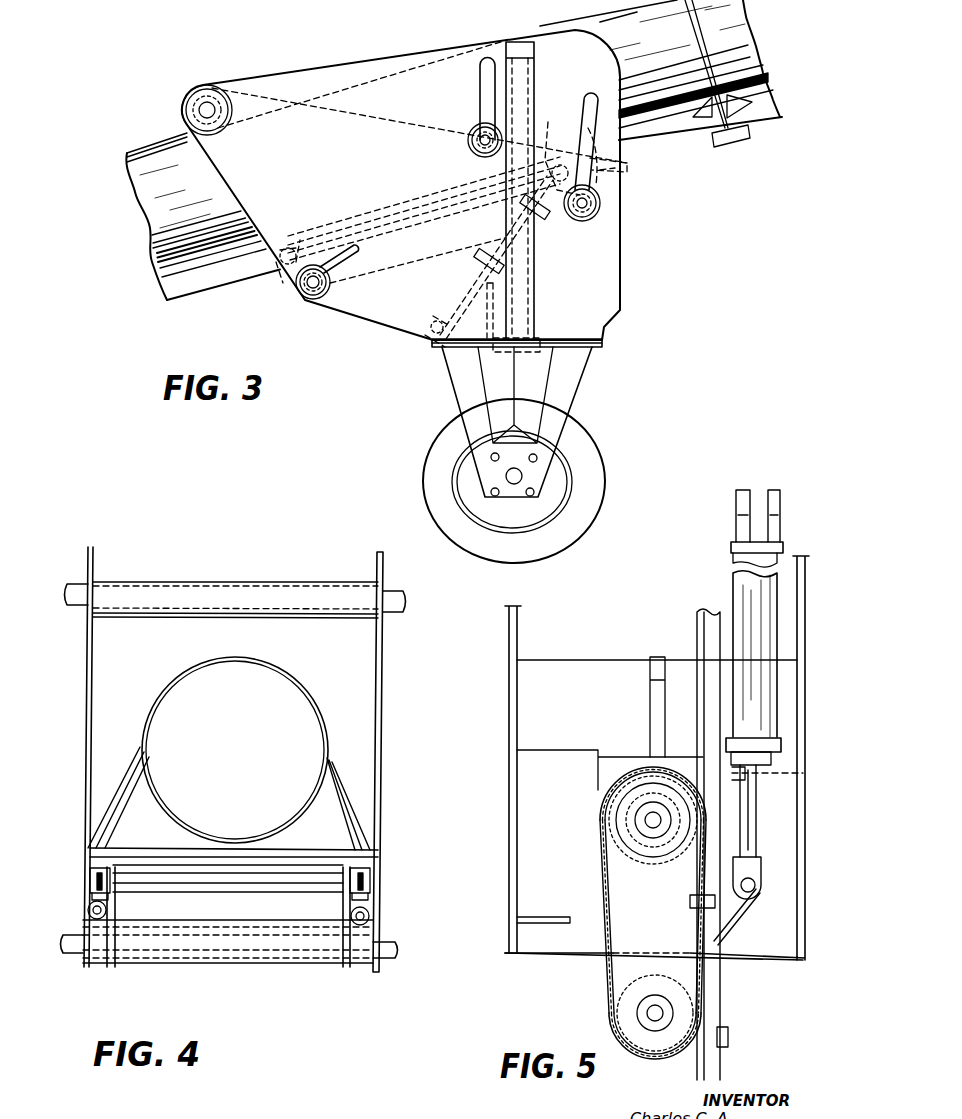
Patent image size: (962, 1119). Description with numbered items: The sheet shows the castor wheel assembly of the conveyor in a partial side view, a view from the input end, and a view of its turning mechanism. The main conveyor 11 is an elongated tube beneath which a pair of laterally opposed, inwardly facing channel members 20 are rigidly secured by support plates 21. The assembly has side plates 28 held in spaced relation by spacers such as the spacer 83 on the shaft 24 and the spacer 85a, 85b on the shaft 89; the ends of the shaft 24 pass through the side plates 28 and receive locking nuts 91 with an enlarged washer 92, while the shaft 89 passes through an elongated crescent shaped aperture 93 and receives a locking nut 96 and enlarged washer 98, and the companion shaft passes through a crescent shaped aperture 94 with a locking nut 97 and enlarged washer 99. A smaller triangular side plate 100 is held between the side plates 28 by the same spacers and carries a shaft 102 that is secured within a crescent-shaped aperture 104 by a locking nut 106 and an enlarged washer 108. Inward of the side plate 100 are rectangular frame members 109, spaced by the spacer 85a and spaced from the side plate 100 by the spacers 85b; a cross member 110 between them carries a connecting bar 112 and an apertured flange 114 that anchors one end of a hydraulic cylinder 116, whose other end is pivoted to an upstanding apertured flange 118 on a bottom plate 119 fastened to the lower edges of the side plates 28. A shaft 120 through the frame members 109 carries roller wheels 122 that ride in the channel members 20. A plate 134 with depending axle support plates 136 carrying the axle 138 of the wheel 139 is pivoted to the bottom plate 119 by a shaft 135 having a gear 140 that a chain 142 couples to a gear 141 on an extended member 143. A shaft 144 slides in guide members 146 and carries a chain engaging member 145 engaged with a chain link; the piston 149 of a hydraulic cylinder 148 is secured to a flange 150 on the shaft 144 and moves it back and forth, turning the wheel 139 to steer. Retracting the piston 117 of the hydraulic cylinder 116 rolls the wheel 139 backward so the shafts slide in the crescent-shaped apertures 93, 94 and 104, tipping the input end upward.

In FIG. 3, the side plates 28 is at (337, 62).
In FIG. 5, the side plates 28 is at (804, 838).
In FIG. 3, the locking nuts 91 is at (188, 100).
In FIG. 3, the enlarged washer 92 is at (204, 90).
In FIG. 3, the crescent shaped aperture 93 is at (357, 266).
In FIG. 3, the crescent shaped aperture 94 is at (606, 100).
In FIG. 3, the locking nut 96 is at (304, 293).
In FIG. 3, the locking nut 97 is at (600, 208).
In FIG. 3, the enlarged washer 98 is at (310, 300).
In FIG. 3, the enlarged washer 99 is at (596, 218).
In FIG. 3, the side plate 100 is at (275, 92).
In FIG. 4, the side plate 100 is at (82, 716).
In FIG. 3, the shaft 102 is at (478, 128).
In FIG. 3, the crescent-shaped aperture 104 is at (508, 42).
In FIG. 3, the locking nut 106 is at (474, 152).
In FIG. 3, the enlarged washer 108 is at (472, 140).
In FIG. 3, the cross member 110 is at (590, 152).
In FIG. 3, the connecting bar 112 is at (627, 163).
In FIG. 3, the apertured flange 114 is at (552, 224).
In FIG. 3, the hydraulic cylinder 116 is at (540, 264).
In FIG. 3, the piston 117 is at (457, 296).
In FIG. 3, the upstanding apertured flange 118 is at (440, 348).
In FIG. 3, the bottom plate 119 is at (597, 336).
In FIG. 5, the bottom plate 119 is at (781, 955).
In FIG. 3, the shaft 120 is at (618, 173).
In FIG. 4, the shaft 120 is at (96, 882).
In FIG. 3, the roller wheels 122 is at (588, 126).
In FIG. 4, the roller wheels 122 is at (92, 872).
In FIG. 3, the plate 134 is at (587, 362).
In FIG. 3, the axle support plates 136 is at (580, 394).
In FIG. 3, the axle 138 is at (506, 476).
In FIG. 3, the wheel 139 is at (594, 483).
In FIG. 4, the main conveyor 11 is at (298, 690).
In FIG. 4, the channel members 20 is at (96, 900).
In FIG. 4, the support plates 21 is at (128, 770).
In FIG. 4, the shaft 24 is at (392, 596).
In FIG. 4, the spacer 83 is at (312, 580).
In FIG. 4, the spacer 85a is at (195, 969).
In FIG. 4, the spacers 85b is at (95, 969).
In FIG. 4, the shaft 89 is at (388, 958).
In FIG. 4, the frame members 109 is at (108, 918).
In FIG. 5, the shaft 135 is at (633, 805).
In FIG. 5, the gear 140 is at (620, 855).
In FIG. 5, the gear 141 is at (632, 996).
In FIG. 5, the chain 142 is at (607, 885).
In FIG. 5, the extended member 143 is at (627, 968).
In FIG. 5, the shaft 144 is at (712, 1004).
In FIG. 5, the chain engaging member 145 is at (735, 924).
In FIG. 5, the guide members 146 is at (803, 775).
In FIG. 5, the hydraulic cylinder 148 is at (762, 614).
In FIG. 5, the piston 149 is at (758, 808).
In FIG. 5, the flange 150 is at (744, 900).